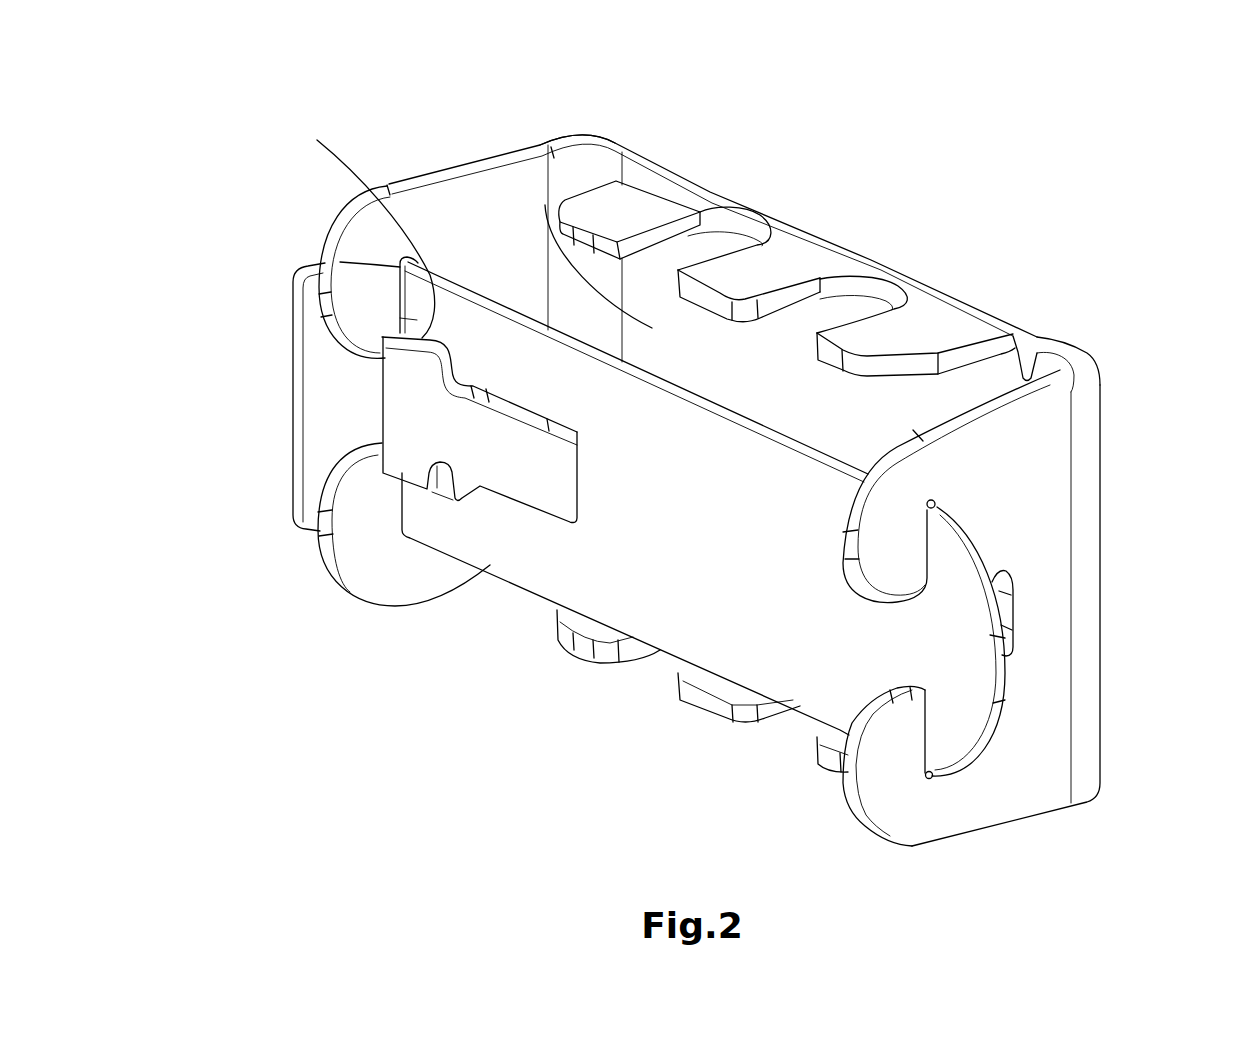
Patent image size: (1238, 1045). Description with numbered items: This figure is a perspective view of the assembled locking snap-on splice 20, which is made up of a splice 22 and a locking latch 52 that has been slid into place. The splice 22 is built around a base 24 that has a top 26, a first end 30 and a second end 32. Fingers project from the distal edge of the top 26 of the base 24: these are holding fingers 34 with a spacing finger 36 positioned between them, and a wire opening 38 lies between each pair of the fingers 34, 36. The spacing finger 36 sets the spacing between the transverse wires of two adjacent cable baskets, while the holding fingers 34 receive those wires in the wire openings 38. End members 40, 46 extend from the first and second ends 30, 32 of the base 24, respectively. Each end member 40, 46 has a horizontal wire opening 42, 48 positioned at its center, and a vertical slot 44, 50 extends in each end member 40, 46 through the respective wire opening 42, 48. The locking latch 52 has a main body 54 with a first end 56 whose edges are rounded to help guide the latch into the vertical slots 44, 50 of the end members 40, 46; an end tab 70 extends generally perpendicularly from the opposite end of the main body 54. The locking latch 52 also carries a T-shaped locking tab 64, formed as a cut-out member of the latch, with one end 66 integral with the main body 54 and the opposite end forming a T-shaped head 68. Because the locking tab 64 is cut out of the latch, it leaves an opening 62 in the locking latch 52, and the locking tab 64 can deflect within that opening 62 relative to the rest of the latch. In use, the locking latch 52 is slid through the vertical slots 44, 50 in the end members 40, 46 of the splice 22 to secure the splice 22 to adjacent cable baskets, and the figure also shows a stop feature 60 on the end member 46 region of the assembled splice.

The locking snap-on splice 20 is at (496, 116).
The splice 22 is at (918, 285).
The base 24 is at (545, 205).
The top 26 is at (1067, 338).
The first end 30 is at (627, 148).
The second end 32 is at (1073, 356).
The holding fingers 34 is at (633, 208).
The spacing finger 36 is at (763, 273).
The wire opening 38 is at (702, 248).
The end member 40 is at (470, 173).
The horizontal wire opening 42 is at (378, 364).
The vertical slot 44 is at (320, 255).
The end member 46 is at (1037, 677).
The horizontal wire opening 48 is at (895, 643).
The vertical slot 50 is at (937, 505).
The locking latch 52 is at (520, 578).
The main body 54 is at (682, 622).
The first end 56 is at (957, 745).
The stop tab 60 is at (1000, 718).
The opening 62 is at (356, 224).
The T-shaped locking tab 64 is at (505, 455).
The end 66 is at (568, 480).
The T-shaped head 68 is at (408, 450).
The end tab 70 is at (313, 415).